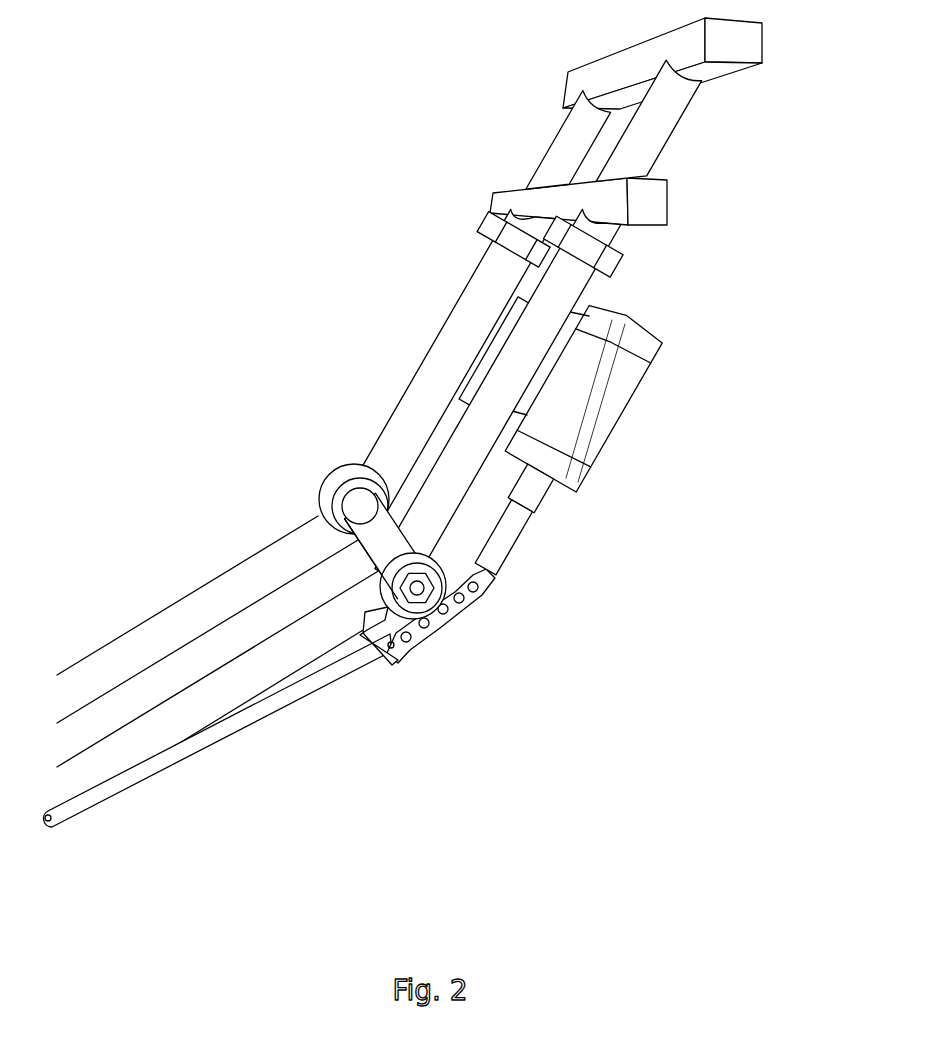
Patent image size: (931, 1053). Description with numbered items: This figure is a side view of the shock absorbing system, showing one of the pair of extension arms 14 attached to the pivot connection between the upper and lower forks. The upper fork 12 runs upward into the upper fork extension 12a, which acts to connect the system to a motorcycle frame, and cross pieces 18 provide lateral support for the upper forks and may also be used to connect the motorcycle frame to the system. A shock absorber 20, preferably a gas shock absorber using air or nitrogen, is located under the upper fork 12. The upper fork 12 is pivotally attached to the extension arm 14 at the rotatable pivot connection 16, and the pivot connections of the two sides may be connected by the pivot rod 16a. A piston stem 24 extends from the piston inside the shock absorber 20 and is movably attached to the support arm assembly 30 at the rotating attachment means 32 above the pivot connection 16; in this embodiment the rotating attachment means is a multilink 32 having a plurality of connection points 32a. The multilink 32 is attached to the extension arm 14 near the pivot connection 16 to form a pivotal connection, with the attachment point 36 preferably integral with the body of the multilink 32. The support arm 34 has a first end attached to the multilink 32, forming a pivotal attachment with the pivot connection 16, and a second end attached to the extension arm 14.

The upper fork 12 is at (572, 277).
The upper fork extension 12a is at (555, 155).
The extension arm 14 is at (193, 713).
The pivot connection 16 is at (340, 482).
The pivot rod 16a is at (343, 532).
The cross piece 18 is at (568, 78).
The shock absorber 20 is at (488, 350).
The piston stem 24 is at (510, 526).
The support arm assembly 30 is at (470, 652).
The multilink 32 is at (467, 599).
The connection point 32a is at (450, 606).
The support arm 34 is at (197, 745).
The attachment point 36 is at (382, 632).